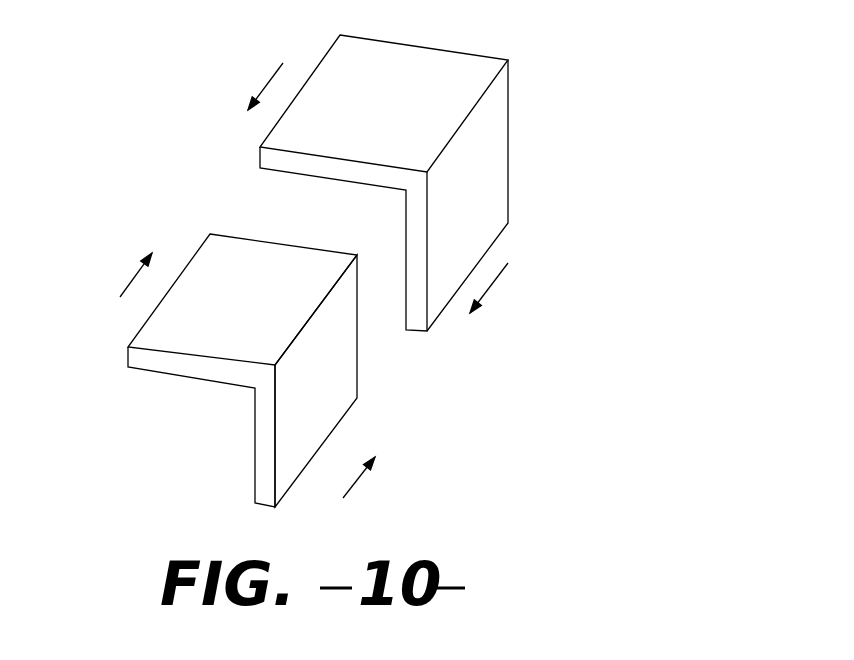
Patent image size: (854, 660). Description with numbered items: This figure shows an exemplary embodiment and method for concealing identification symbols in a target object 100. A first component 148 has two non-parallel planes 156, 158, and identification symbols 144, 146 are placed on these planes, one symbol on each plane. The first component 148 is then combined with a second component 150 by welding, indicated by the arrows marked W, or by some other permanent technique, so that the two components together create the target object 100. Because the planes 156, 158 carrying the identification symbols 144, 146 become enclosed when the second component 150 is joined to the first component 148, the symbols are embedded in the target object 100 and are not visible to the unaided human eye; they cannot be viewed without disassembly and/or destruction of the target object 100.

The target object 100 is at (287, 283).
The identification symbol 144 is at (247, 262).
The identification symbol 146 is at (295, 407).
The first component 148 is at (158, 362).
The second component 150 is at (413, 303).
The non-parallel plane 156 is at (302, 275).
The non-parallel plane 158 is at (342, 307).